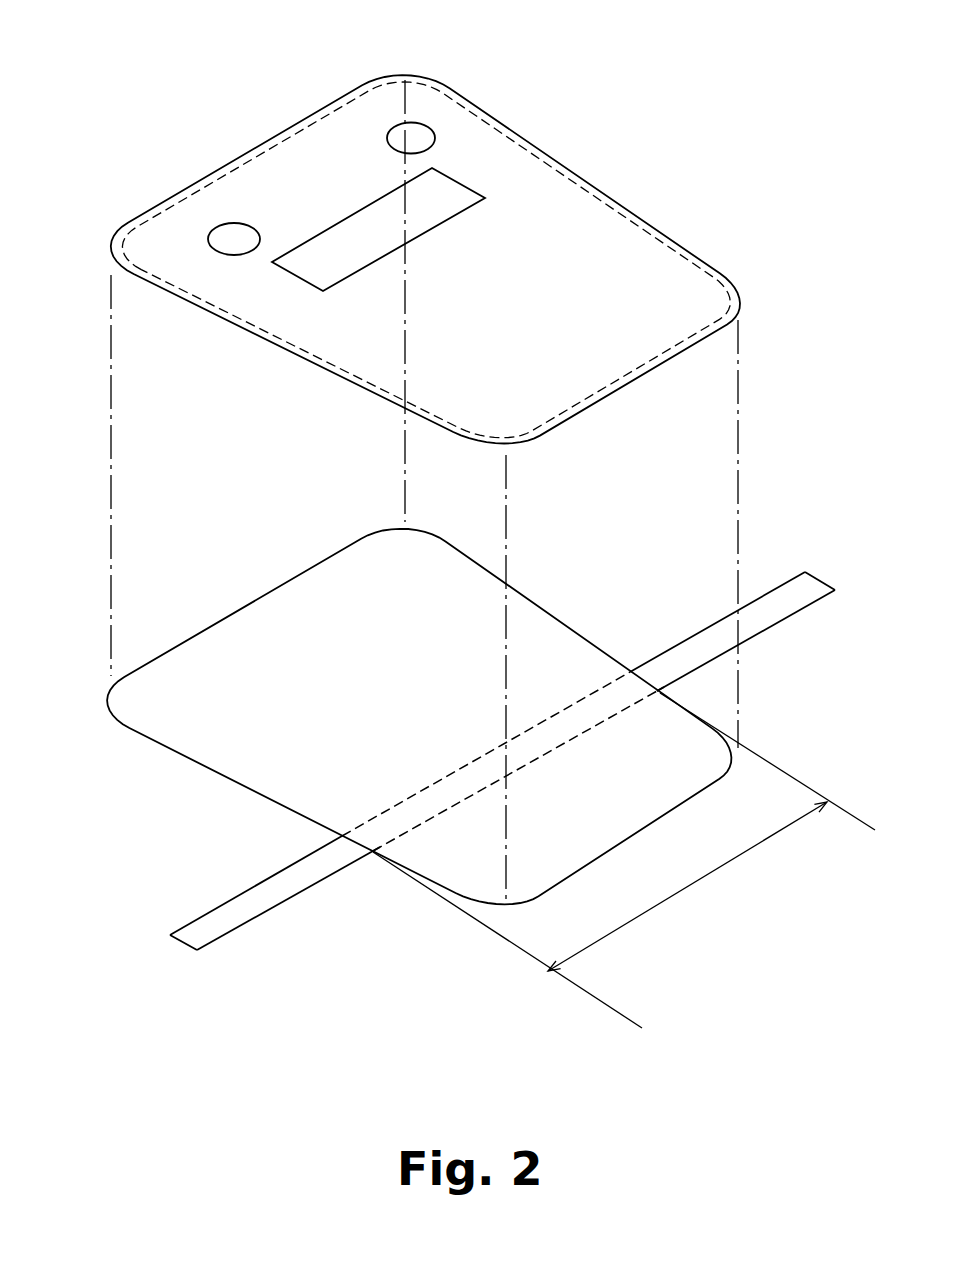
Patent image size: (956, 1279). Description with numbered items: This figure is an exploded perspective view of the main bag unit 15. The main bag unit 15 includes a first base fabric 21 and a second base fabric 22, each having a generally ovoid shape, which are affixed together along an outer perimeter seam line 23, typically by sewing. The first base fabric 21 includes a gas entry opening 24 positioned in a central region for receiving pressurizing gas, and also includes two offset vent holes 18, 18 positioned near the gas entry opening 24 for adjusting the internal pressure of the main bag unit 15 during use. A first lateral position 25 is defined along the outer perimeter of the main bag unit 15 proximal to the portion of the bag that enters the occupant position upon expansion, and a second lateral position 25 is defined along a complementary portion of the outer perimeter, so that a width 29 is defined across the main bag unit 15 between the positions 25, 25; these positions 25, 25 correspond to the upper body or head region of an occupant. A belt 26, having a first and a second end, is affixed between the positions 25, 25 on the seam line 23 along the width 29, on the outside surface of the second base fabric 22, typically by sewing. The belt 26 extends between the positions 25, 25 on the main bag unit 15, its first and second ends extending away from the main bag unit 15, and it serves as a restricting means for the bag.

The main bag unit 15 is at (427, 454).
The vent holes 18 is at (218, 228).
The first base fabric 21 is at (167, 291).
The second base fabric 22 is at (187, 758).
The outer perimeter seam line 23 is at (252, 157).
The gas entry opening 24 is at (350, 238).
The lateral position 25 is at (372, 872).
The belt 26 is at (247, 913).
The width 29 is at (705, 876).